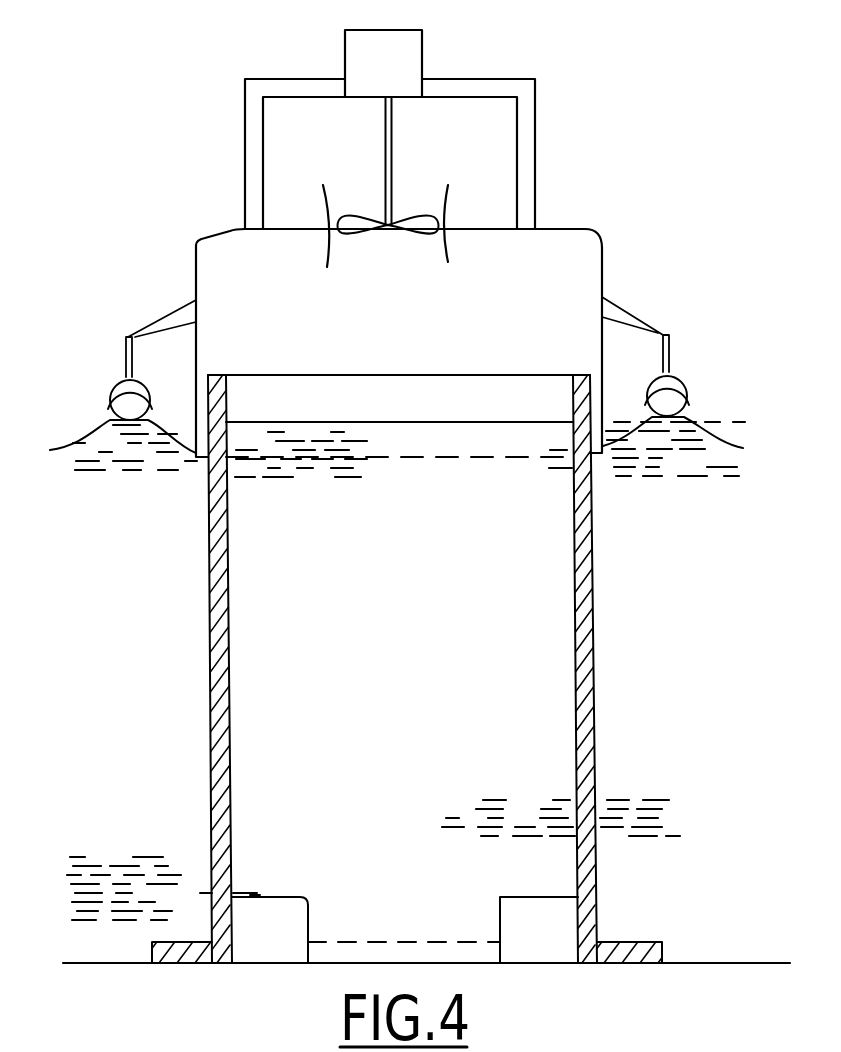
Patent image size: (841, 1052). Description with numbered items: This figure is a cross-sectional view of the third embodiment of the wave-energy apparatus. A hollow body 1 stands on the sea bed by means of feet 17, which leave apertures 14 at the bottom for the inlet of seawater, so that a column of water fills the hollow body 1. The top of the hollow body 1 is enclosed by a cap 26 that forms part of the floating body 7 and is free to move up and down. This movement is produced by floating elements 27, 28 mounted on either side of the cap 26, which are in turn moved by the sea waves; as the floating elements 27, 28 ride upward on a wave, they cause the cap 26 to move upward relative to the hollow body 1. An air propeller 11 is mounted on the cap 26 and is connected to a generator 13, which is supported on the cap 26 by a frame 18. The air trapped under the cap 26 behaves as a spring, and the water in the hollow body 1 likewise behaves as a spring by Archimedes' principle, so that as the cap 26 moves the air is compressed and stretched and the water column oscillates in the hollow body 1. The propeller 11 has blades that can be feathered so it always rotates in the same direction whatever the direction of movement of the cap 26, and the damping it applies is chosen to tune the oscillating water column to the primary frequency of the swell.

The hollow body 1 is at (190, 718).
The floating body 7 is at (411, 326).
The air propeller 11 is at (405, 222).
The generator 13 is at (360, 47).
The apertures 14 is at (295, 918).
The feet 17 is at (215, 916).
The frame 18 is at (257, 150).
The cap 26 is at (196, 244).
The floating element 27 is at (122, 402).
The floating element 28 is at (670, 402).